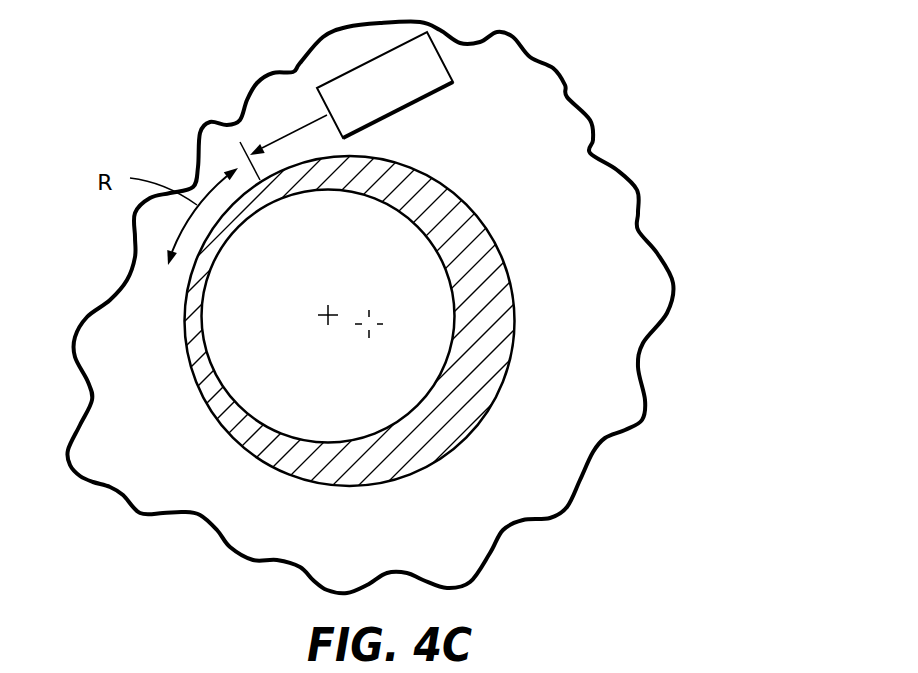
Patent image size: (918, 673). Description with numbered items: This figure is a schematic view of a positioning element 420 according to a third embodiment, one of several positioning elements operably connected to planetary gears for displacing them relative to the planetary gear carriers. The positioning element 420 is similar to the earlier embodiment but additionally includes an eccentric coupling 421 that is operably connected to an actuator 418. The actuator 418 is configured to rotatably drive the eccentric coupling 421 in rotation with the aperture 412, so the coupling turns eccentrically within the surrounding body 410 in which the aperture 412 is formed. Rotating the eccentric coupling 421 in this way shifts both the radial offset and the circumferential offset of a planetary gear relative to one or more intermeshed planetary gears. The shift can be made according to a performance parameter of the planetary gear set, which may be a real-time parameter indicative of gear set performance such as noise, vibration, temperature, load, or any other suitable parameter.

The body 410 is at (374, 547).
The aperture 412 is at (244, 478).
The actuator 418 is at (346, 106).
The positioning element 420 is at (528, 265).
The eccentric coupling 421 is at (468, 380).